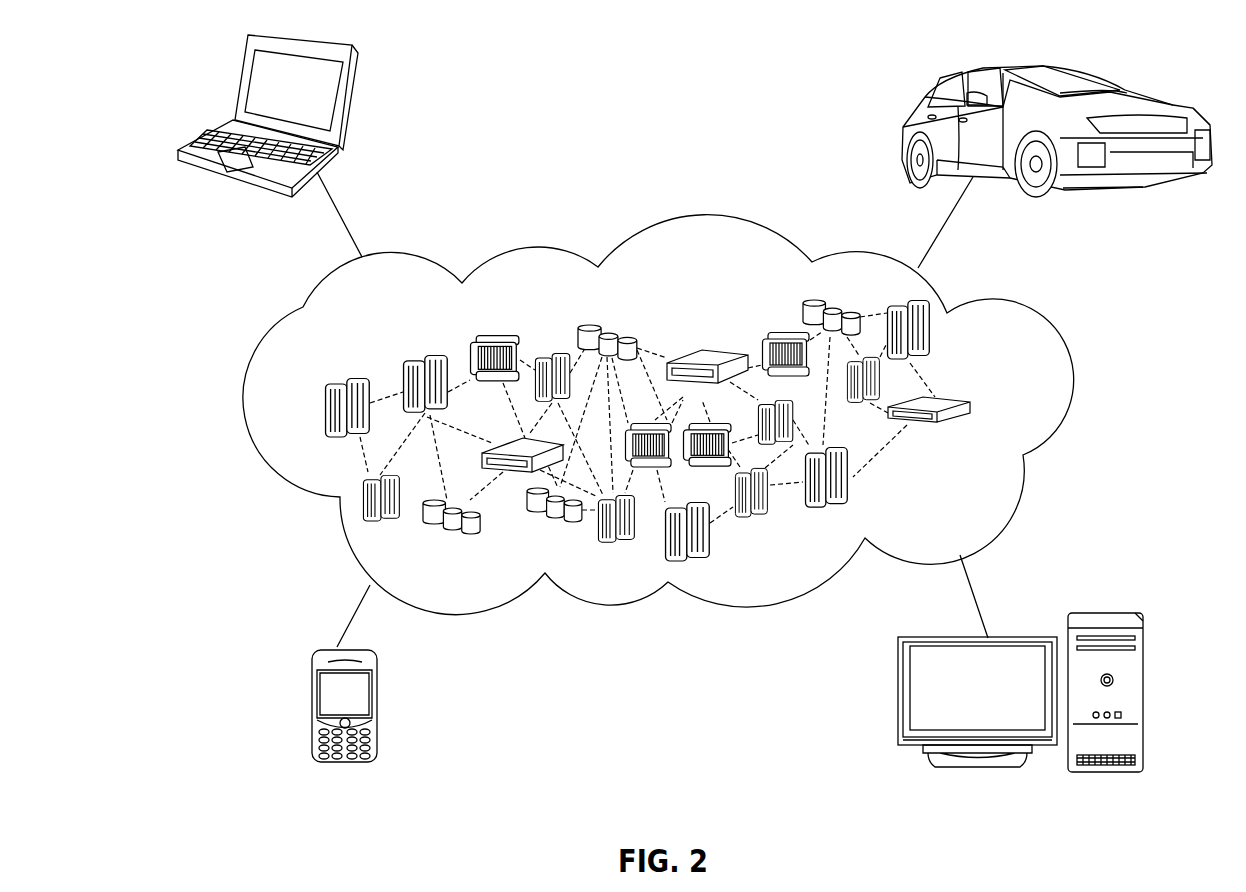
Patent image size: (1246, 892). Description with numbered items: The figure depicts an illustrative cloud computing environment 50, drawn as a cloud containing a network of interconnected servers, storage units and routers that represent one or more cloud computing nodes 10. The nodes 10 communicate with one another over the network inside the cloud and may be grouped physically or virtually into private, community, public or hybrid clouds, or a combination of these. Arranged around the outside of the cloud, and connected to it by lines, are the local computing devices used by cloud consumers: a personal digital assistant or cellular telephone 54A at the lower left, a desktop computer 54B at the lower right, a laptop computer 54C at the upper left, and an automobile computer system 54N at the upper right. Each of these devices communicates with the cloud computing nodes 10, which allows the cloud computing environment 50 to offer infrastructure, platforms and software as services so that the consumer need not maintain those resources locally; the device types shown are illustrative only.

The cloud computing node 10 is at (1006, 407).
The cloud computing environment 50 is at (1027, 323).
The personal digital assistant (PDA) or cellular telephone 54A is at (312, 705).
The desktop computer 54B is at (1108, 613).
The laptop computer 54C is at (350, 105).
The automobile computer system 54N is at (910, 112).